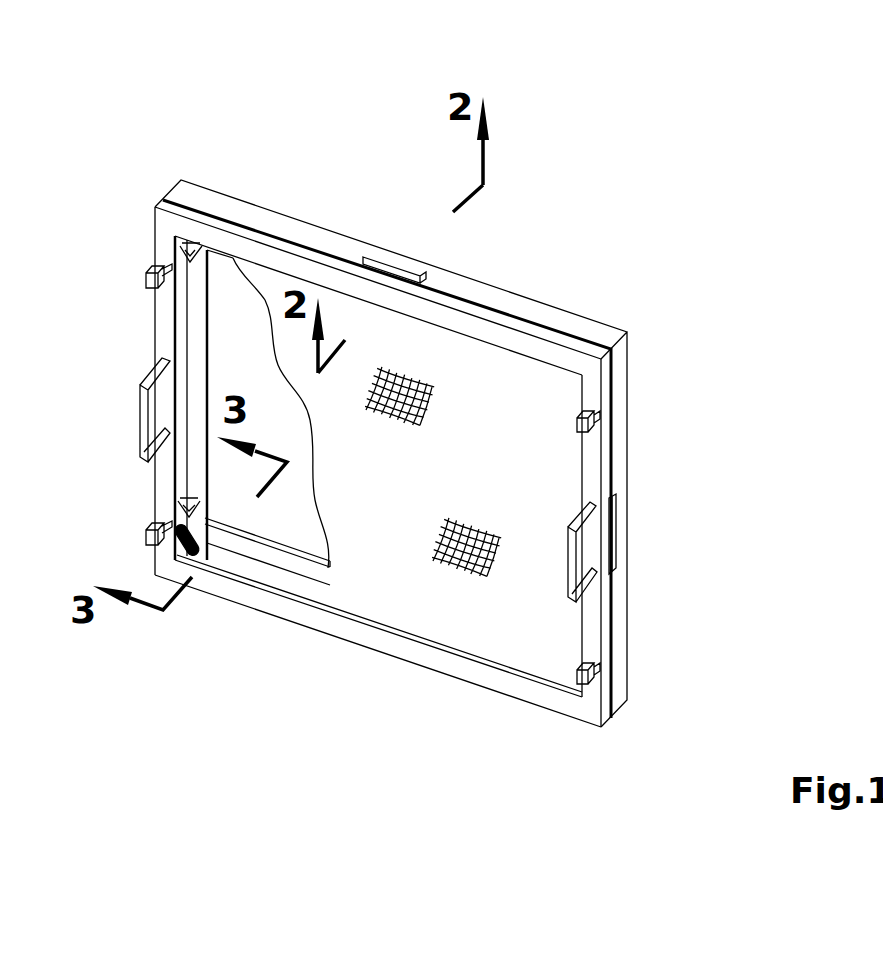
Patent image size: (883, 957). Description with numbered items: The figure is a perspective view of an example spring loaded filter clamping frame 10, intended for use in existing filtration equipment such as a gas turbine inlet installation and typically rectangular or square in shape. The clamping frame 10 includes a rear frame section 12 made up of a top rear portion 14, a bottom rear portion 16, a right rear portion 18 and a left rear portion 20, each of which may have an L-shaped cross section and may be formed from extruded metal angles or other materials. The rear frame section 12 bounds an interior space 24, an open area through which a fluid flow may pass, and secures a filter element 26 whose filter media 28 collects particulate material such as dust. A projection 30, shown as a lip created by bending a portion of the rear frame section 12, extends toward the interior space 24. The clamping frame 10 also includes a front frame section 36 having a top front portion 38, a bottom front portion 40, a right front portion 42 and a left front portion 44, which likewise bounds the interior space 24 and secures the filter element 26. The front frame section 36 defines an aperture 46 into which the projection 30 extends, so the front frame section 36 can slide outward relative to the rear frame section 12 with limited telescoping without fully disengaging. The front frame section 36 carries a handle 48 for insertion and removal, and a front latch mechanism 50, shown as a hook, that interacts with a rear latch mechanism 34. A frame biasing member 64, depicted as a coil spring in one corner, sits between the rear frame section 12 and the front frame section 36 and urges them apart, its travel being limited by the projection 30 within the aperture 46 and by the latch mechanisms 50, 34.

The spring loaded filter clamping frame 10 is at (778, 193).
The rear frame section 12 is at (283, 205).
The top rear portion 14 is at (485, 292).
The bottom rear portion 16 is at (285, 545).
The right rear portion 18 is at (626, 360).
The left rear portion 20 is at (210, 373).
The interior space 24 is at (294, 434).
The filter element 26 is at (452, 618).
The filter media 28 is at (444, 477).
The projection 30 is at (372, 258).
The rear latch mechanism 34 is at (195, 265).
The front frame section 36 is at (258, 605).
The top front portion 38 is at (535, 332).
The bottom front portion 40 is at (538, 690).
The right front portion 42 is at (605, 407).
The left front portion 44 is at (175, 246).
The aperture 46 is at (417, 273).
The handle 48 is at (140, 415).
The front latch mechanism 50 is at (146, 279).
The frame biasing member 64 is at (200, 560).